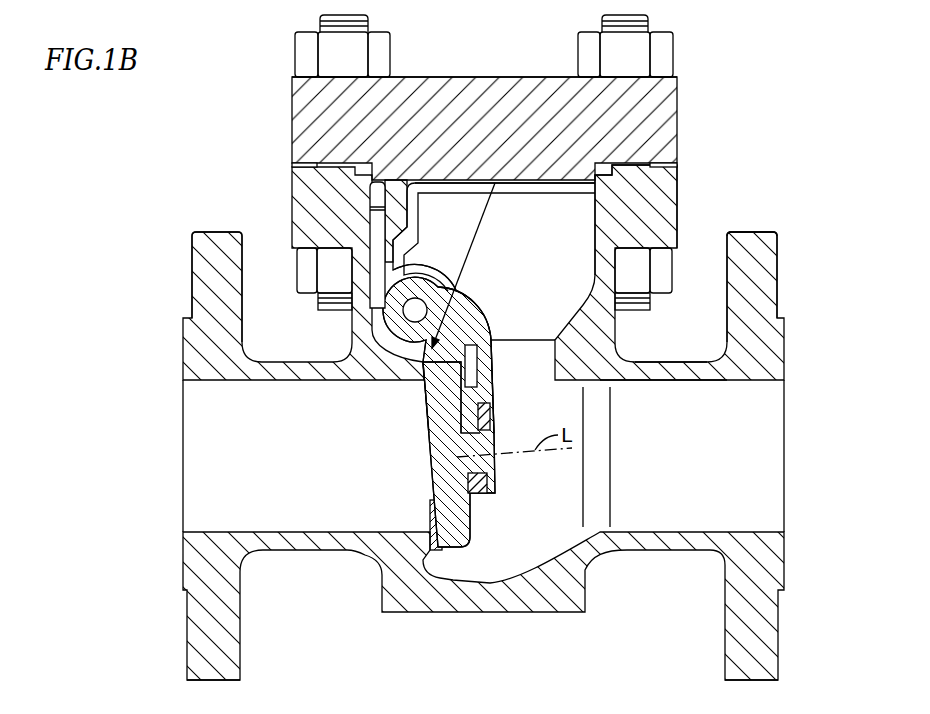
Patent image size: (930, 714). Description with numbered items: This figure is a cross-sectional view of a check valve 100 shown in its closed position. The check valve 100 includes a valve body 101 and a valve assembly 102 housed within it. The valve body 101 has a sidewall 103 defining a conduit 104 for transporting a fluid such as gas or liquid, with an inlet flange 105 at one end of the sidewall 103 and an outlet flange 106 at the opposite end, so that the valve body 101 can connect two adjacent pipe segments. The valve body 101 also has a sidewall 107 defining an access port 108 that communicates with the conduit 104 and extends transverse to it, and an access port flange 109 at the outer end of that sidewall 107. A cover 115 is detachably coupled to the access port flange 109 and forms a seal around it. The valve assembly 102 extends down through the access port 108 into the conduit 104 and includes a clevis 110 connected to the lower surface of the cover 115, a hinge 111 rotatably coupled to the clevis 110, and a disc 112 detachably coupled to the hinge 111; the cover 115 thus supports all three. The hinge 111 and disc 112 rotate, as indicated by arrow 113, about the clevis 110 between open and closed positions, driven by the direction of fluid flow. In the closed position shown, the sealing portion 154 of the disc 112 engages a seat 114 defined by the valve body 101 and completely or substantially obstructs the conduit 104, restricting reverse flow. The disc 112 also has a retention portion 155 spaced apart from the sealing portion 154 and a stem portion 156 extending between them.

The check valve 100 is at (822, 70).
The valve body 101 is at (757, 230).
The valve assembly 102 is at (487, 307).
The sidewall 103 is at (673, 370).
The conduit 104 is at (673, 518).
The inlet flange 105 is at (213, 265).
The outlet flange 106 is at (750, 273).
The sidewall 107 is at (360, 272).
The access port 108 is at (573, 195).
The access port flange 109 is at (635, 222).
The clevis 110 is at (453, 215).
The hinge 111 is at (497, 325).
The disc 112 is at (425, 455).
The arrow 113 is at (392, 272).
The seat 114 is at (430, 540).
The cover 115 is at (427, 95).
The sealing portion 154 is at (440, 390).
The retention portion 155 is at (483, 415).
The stem portion 156 is at (477, 468).